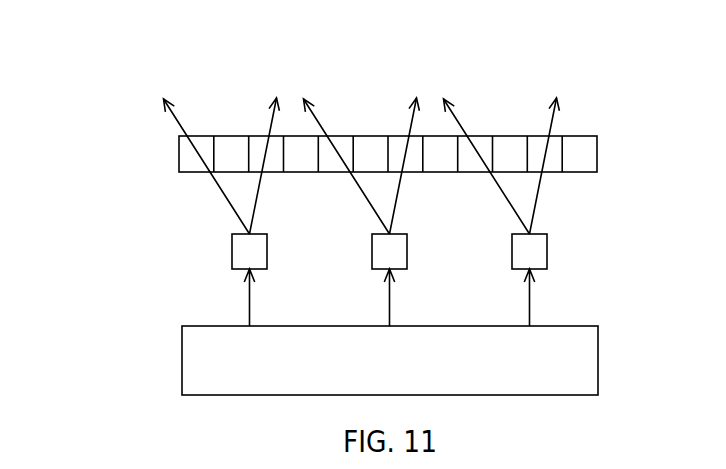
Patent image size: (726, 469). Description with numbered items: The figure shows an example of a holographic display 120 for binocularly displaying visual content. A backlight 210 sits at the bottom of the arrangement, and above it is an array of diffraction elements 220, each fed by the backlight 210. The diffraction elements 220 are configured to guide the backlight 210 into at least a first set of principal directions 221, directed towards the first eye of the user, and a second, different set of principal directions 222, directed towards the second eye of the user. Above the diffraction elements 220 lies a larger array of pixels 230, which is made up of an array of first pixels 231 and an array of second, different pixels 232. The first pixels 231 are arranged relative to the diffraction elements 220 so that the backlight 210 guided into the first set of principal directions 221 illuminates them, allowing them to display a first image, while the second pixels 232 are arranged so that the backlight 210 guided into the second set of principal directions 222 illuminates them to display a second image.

The holographic display 120 is at (120, 156).
The backlight 210 is at (598, 357).
The diffraction elements 220 is at (268, 272).
The first set of principal directions 221 is at (178, 107).
The second set of principal directions 222 is at (553, 100).
The array of pixels 230 is at (605, 125).
The first pixels 231 is at (477, 198).
The second pixels 232 is at (555, 198).